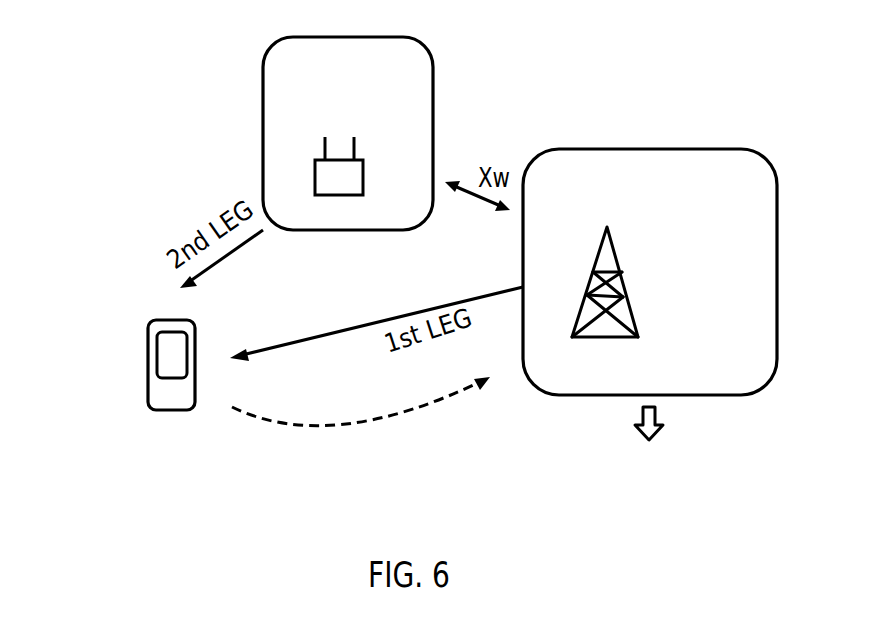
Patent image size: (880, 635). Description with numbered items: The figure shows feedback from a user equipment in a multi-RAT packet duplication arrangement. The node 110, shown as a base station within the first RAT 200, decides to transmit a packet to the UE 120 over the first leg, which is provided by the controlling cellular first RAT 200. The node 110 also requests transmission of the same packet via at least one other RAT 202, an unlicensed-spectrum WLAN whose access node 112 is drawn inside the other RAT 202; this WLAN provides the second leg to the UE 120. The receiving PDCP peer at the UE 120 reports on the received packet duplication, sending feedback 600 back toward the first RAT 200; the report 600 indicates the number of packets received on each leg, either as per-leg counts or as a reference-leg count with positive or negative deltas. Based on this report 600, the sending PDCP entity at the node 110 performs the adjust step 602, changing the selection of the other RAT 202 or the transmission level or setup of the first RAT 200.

The other RAT 202 is at (348, 133).
The access node of the WLAN RAT 112 is at (363, 160).
The first RAT 200 is at (650, 272).
The node 110 is at (610, 236).
The UE 120 is at (148, 390).
The feedback 600 is at (348, 432).
The adjust step 602 is at (660, 453).